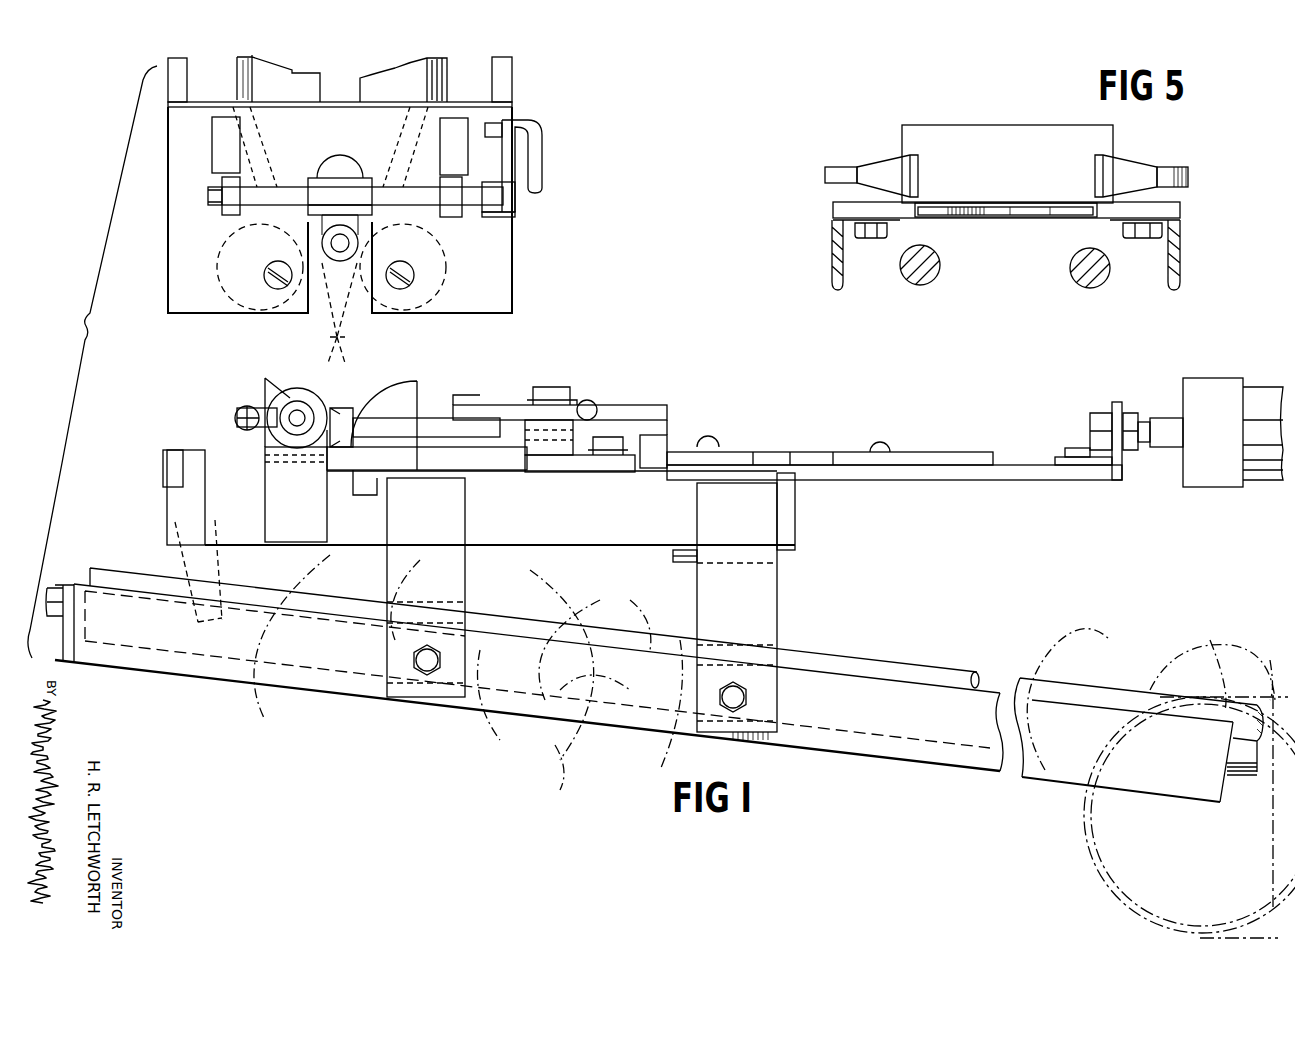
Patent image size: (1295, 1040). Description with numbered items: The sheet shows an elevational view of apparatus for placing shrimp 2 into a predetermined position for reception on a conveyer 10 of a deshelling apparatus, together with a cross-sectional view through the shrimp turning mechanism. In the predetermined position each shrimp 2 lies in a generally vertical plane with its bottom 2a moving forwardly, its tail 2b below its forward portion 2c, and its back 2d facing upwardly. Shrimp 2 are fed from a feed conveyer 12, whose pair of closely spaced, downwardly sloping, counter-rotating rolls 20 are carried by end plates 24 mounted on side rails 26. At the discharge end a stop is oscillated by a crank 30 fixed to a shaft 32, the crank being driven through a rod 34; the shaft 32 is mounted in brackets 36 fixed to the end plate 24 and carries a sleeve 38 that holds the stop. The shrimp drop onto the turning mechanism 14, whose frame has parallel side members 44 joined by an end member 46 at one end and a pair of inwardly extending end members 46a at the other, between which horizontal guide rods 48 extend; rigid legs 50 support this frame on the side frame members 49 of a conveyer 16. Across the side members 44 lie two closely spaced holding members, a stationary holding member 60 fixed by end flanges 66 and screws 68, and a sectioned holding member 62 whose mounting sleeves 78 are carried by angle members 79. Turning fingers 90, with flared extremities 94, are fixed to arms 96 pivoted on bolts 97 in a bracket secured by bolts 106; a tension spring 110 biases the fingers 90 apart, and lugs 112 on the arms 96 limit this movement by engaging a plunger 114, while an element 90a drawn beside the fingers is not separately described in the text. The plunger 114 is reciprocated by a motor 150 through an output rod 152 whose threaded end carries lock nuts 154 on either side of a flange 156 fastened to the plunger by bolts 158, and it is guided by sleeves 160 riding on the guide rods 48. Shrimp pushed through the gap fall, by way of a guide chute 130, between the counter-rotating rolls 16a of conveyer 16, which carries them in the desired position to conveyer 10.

In FIG. 1, the shrimp 2 is at (333, 295).
In FIG. 1, the bottom 2a is at (580, 679).
In FIG. 1, the tail 2b is at (556, 760).
In FIG. 1, the forward portion 2c is at (633, 602).
In FIG. 1, the back 2d is at (530, 656).
In FIG. 1, the conveyer 10 is at (1130, 898).
In FIG. 1, the feed conveyer 12 is at (527, 110).
In FIG. 1, the turning mechanism 14 is at (523, 381).
In FIG. 1, the conveyer 16 is at (812, 672).
In FIG. 1, the counter-rotating rolls 16a is at (110, 573).
In FIG. 1, the rolls 20 is at (258, 311).
In FIG. 1, the end plates 24 is at (500, 273).
In FIG. 1, the side rails 26 is at (187, 80).
In FIG. 1, the crank 30 is at (528, 190).
In FIG. 1, the shaft 32 is at (297, 187).
In FIG. 1, the rod 34 is at (542, 155).
In FIG. 1, the brackets 36 is at (455, 128).
In FIG. 1, the sleeve 38 is at (358, 236).
In FIG. 1, the side members 44 is at (538, 548).
In FIG. 5, the side members 44 is at (832, 263).
In FIG. 1, the end member 46 is at (792, 530).
In FIG. 1, the end members 46a is at (167, 501).
In FIG. 5, the guide rods 48 is at (1070, 270).
In FIG. 1, the side frame members 49 is at (873, 759).
In FIG. 1, the legs 50 is at (465, 561).
In FIG. 1, the stationary holding member 60 is at (411, 386).
In FIG. 5, the stationary holding member 60 is at (1010, 130).
In FIG. 1, the holding member 62 is at (268, 382).
In FIG. 5, the end flanges 66 is at (1180, 212).
In FIG. 5, the screws 68 is at (870, 238).
In FIG. 1, the sleeves 78 is at (310, 396).
In FIG. 1, the angle members 79 is at (265, 458).
In FIG. 5, the turning fingers 90 is at (842, 172).
In FIG. 1, the bar 90a is at (420, 425).
In FIG. 5, the extremities 94 is at (912, 168).
In FIG. 1, the arms 96 is at (512, 405).
In FIG. 1, the bolts 97 is at (556, 392).
In FIG. 1, the bolts 106 is at (612, 437).
In FIG. 1, the tension spring 110 is at (592, 402).
In FIG. 1, the lugs 112 is at (660, 440).
In FIG. 1, the plunger 114 is at (1010, 479).
In FIG. 1, the guide chute 130 is at (183, 572).
In FIG. 1, the motor 150 is at (1258, 395).
In FIG. 1, the output rod 152 is at (1143, 420).
In FIG. 1, the lock nuts 154 is at (1095, 420).
In FIG. 1, the flange 156 is at (1115, 405).
In FIG. 1, the bolts 158 is at (1060, 456).
In FIG. 1, the sleeves 160 is at (685, 550).